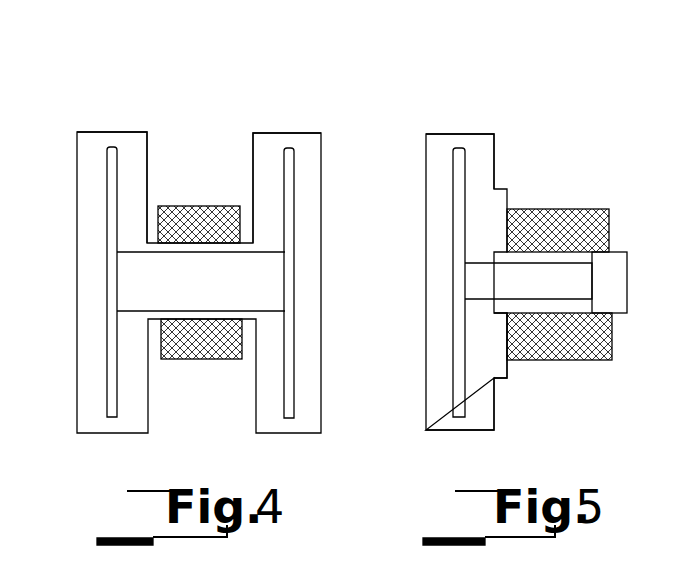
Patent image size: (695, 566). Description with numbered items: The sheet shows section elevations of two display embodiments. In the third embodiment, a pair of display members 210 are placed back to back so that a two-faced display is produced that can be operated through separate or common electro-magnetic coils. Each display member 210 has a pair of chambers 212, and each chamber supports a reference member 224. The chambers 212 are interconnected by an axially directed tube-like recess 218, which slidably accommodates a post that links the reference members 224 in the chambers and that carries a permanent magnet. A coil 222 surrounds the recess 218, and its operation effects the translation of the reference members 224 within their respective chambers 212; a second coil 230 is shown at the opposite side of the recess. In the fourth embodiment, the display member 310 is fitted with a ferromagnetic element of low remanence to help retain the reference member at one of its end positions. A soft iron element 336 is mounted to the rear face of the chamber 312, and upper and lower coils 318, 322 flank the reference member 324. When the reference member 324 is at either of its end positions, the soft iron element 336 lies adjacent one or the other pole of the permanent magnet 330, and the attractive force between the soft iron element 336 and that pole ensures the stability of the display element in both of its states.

In FIG. 4, the display member 210 is at (72, 92).
In FIG. 4, the chamber 212 is at (112, 137).
In FIG. 4, the tube-like recess 218 is at (227, 313).
In FIG. 4, the coil 222 is at (197, 206).
In FIG. 4, the reference member 224 is at (112, 228).
In FIG. 4, the lower winding 230 is at (177, 290).
In FIG. 5, the magnetic core assembly 310 is at (439, 111).
In FIG. 5, the chamber 312 is at (437, 216).
In FIG. 5, the upper winding 318 is at (610, 263).
In FIG. 5, the lower winding 322 is at (583, 350).
In FIG. 5, the reference member 324 is at (460, 279).
In FIG. 5, the permanent magnet 330 is at (583, 288).
In FIG. 5, the soft iron element 336 is at (503, 376).